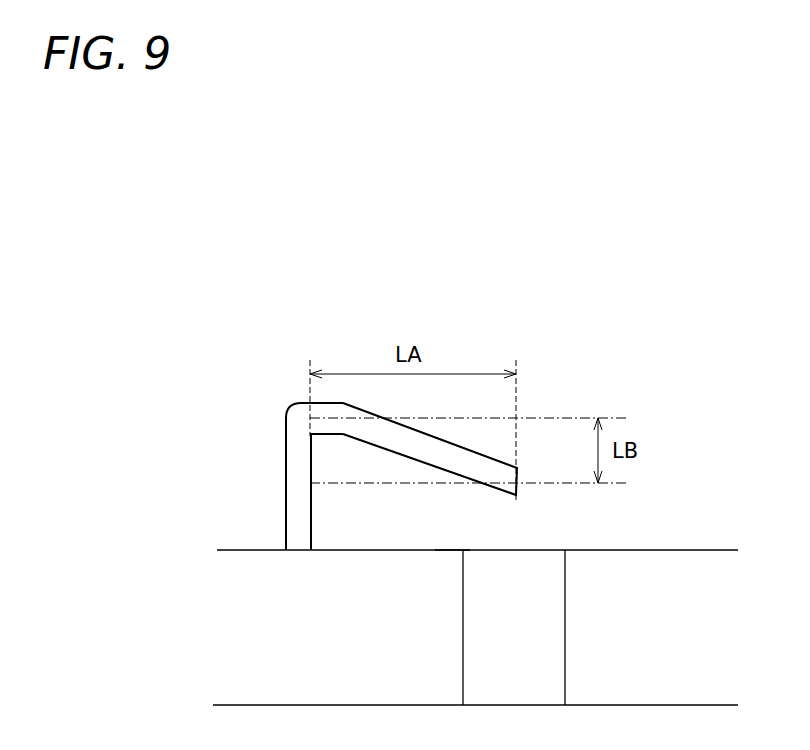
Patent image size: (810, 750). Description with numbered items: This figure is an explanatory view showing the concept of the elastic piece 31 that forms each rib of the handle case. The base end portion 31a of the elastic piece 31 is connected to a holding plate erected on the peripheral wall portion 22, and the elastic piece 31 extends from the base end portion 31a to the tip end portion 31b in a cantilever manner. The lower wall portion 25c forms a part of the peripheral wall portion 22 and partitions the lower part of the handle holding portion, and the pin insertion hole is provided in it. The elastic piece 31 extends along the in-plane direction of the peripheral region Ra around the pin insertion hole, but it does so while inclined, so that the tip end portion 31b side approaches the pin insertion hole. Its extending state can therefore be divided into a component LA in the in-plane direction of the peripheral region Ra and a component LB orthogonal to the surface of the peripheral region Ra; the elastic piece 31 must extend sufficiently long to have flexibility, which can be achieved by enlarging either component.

The elastic piece 31 is at (374, 432).
The base end portion 31a is at (287, 453).
The tip end portion 31b is at (517, 468).
The peripheral wall portion 22 is at (237, 549).
The peripheral region Ra is at (445, 545).
The lower wall portion 25c is at (550, 549).